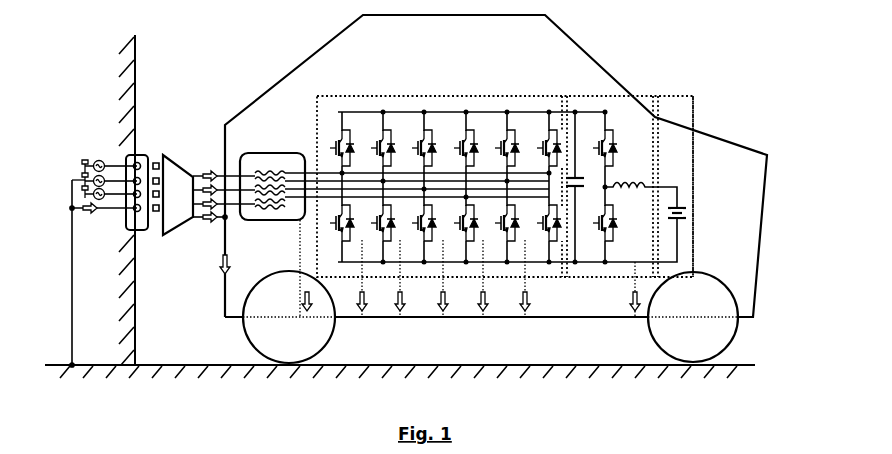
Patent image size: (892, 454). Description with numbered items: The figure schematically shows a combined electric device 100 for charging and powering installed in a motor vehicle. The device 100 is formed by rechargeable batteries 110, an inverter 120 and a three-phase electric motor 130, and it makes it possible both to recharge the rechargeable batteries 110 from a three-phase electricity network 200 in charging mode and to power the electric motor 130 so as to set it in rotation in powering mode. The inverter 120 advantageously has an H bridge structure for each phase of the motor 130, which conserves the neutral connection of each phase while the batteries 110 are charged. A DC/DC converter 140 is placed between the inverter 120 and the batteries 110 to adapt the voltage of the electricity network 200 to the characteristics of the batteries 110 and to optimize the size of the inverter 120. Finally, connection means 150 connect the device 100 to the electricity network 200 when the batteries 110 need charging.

The combined electric device for charging and powering 100 is at (440, 94).
The rechargeable batteries 110 is at (683, 95).
The inverter 120 is at (497, 95).
The electric motor 130 is at (265, 154).
The DC/DC converter 140 is at (612, 95).
The connection means 150 is at (174, 165).
The three-phase electricity network 200 is at (142, 153).